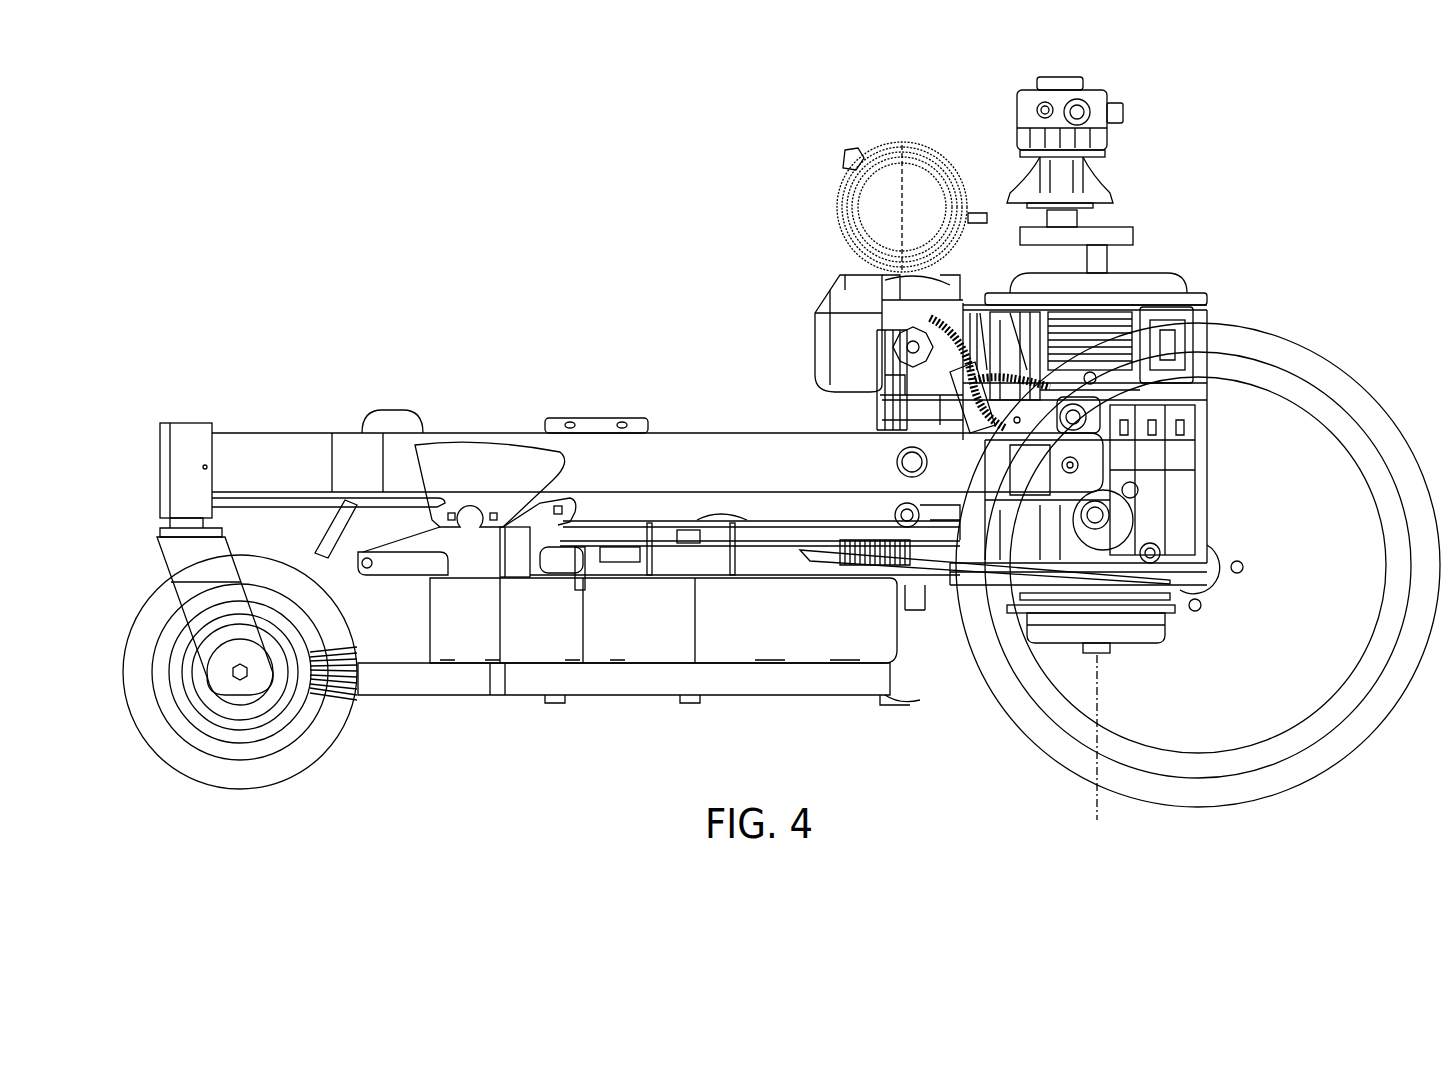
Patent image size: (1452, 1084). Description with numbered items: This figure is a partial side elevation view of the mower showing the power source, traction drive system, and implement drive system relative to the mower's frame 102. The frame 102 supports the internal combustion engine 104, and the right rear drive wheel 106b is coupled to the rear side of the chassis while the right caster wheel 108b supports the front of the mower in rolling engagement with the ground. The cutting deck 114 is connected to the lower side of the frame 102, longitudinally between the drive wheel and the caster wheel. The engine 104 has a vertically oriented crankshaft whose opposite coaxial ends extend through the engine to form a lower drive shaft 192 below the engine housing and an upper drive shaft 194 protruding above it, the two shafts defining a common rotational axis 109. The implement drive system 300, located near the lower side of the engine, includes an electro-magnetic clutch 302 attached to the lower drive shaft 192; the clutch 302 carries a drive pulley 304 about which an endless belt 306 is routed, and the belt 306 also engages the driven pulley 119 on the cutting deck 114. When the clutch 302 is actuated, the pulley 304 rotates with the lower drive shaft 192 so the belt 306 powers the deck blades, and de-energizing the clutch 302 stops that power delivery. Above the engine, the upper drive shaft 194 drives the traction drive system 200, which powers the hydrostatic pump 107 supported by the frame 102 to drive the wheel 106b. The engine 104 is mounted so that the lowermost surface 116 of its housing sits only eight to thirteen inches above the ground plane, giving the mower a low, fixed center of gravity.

The traction drive system 200 is at (972, 112).
The hydrostatic pump 107 is at (1092, 90).
The upper drive shaft 194 is at (1112, 262).
The internal combustion engine 104 is at (1192, 300).
The lowermost surface of the engine housing 116 is at (1210, 590).
The frame 102 is at (728, 432).
The driven pulley 119 is at (668, 575).
The cutting deck 114 is at (500, 697).
The right caster wheel 108b is at (303, 773).
The right rear drive wheel 106b is at (1340, 753).
The rotational axis 109 is at (1100, 777).
The electro-magnetic clutch 302 is at (1070, 600).
The implement drive system 300 is at (1123, 662).
The lower drive shaft 192 is at (1113, 645).
The drive pulley 304 is at (1003, 590).
The endless belt 306 is at (922, 590).